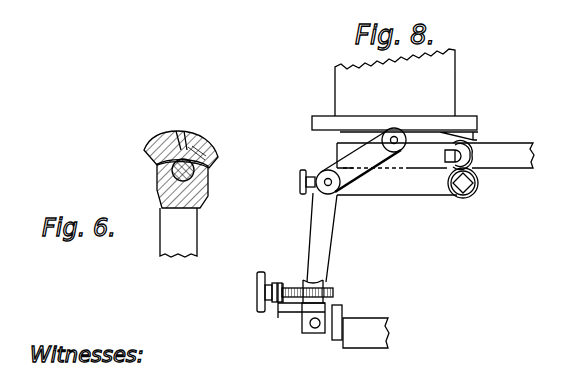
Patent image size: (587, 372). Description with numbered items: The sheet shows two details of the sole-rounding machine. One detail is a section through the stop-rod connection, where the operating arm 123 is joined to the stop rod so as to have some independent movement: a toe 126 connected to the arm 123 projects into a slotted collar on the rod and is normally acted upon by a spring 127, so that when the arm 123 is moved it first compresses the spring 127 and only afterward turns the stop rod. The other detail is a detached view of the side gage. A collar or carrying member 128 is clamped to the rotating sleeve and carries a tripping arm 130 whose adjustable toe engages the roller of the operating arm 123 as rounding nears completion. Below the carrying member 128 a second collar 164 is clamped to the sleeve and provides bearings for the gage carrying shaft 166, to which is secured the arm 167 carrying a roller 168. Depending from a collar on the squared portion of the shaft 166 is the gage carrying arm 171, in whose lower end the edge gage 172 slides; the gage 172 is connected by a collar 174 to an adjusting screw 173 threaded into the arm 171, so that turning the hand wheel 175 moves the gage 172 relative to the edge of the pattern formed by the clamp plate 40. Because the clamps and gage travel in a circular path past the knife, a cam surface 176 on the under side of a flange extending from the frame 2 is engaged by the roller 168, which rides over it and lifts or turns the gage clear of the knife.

In FIG. 8, the goose-neck upper portion 2 is at (455, 75).
In FIG. 8, the plate 40 is at (388, 330).
In FIG. 6, the operating arm 123 is at (196, 220).
In FIG. 6, the toe 126 is at (187, 133).
In FIG. 6, the spring 127 is at (150, 160).
In FIG. 8, the collar or carrying member 128 is at (423, 163).
In FIG. 8, the tripping arm 130 is at (512, 170).
In FIG. 8, the second collar 164 is at (368, 189).
In FIG. 8, the gage carrying shaft 166 is at (325, 184).
In FIG. 8, the arm 167 is at (353, 158).
In FIG. 8, the roller 168 is at (425, 100).
In FIG. 8, the gage carrying arm 171 is at (329, 256).
In FIG. 8, the edge gage 172 is at (343, 316).
In FIG. 8, the adjusting screw 173 is at (295, 286).
In FIG. 8, the collar 174 is at (277, 283).
In FIG. 8, the hand wheel 175 is at (256, 290).
In FIG. 8, the cam surface 176 is at (478, 138).